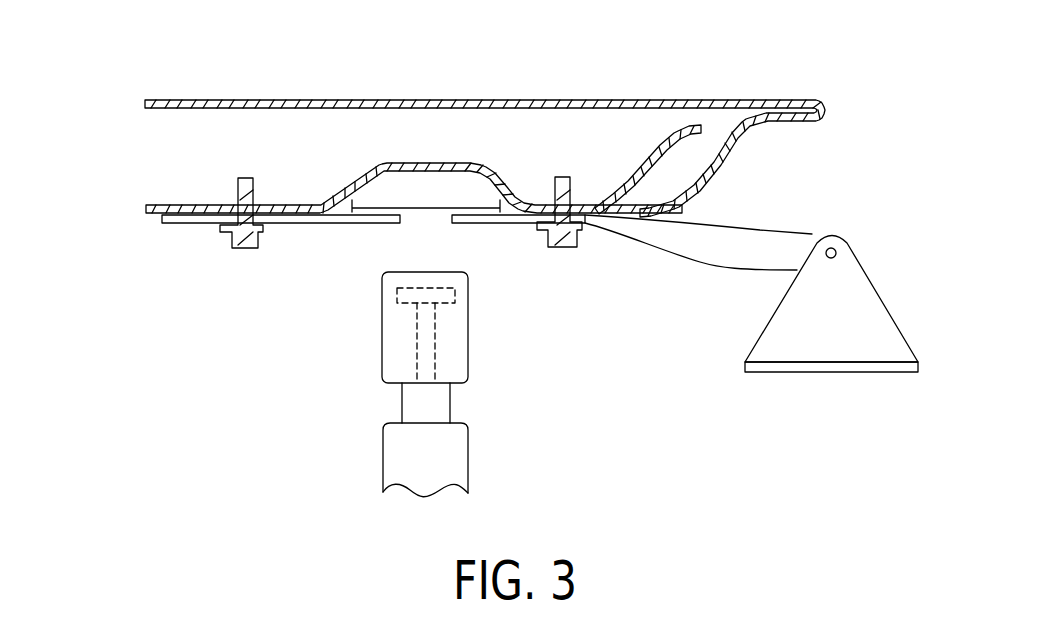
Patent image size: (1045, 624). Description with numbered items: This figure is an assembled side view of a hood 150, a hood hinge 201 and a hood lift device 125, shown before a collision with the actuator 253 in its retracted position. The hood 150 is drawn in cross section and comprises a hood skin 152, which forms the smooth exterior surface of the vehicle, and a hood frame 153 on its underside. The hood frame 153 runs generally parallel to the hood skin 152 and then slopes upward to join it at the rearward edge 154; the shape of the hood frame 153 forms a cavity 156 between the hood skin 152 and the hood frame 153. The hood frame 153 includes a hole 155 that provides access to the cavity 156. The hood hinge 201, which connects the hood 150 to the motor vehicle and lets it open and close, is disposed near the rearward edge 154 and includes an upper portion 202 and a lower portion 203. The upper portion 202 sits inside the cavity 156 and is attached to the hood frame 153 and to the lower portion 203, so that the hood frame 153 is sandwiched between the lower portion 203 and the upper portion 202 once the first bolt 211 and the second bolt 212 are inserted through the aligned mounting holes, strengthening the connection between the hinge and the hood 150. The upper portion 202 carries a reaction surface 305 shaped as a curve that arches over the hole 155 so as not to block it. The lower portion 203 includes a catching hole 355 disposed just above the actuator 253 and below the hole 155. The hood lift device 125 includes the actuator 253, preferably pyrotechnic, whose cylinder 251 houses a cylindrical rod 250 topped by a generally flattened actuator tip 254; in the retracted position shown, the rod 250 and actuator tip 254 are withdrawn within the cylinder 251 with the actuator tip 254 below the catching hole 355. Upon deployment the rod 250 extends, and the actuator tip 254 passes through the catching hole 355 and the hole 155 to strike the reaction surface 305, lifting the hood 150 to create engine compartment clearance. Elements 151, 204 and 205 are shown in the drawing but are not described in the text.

The hood lift device 125 is at (536, 447).
The hood 150 is at (172, 84).
The outer panel 151 is at (670, 90).
The hood skin 152 is at (547, 102).
The hood frame 153 is at (718, 182).
The rearward edge 154 is at (828, 106).
The hole 155 is at (423, 205).
The cavity 156 is at (162, 155).
The hood hinge 201 is at (772, 210).
The upper portion 202 is at (350, 180).
The lower portion 203 is at (691, 275).
The mounting bracket 204 is at (815, 236).
The bracket plate 205 is at (167, 225).
The first bolt 211 is at (567, 248).
The second bolt 212 is at (235, 250).
The rod 250 is at (415, 348).
The cylinder 251 is at (470, 362).
The actuator 253 is at (383, 478).
The actuator tip 254 is at (385, 290).
The reaction surface 305 is at (417, 163).
The catching hole 355 is at (424, 232).